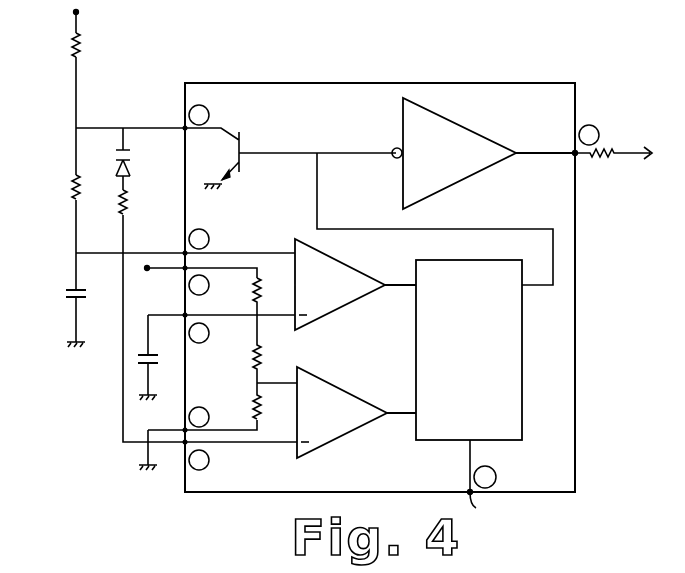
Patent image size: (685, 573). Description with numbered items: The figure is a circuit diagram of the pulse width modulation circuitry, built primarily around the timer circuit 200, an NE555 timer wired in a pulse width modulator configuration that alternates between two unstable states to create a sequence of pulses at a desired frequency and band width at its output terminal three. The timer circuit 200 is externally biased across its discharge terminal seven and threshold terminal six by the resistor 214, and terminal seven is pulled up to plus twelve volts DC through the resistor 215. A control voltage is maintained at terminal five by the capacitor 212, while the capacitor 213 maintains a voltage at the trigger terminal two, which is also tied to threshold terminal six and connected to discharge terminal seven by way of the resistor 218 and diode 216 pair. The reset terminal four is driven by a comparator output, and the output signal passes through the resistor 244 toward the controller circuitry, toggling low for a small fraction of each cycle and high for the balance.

The timer circuit 200 is at (546, 114).
The capacitor 212 is at (158, 368).
The capacitor 213 is at (74, 290).
The resistor 214 is at (74, 190).
The resistor 215 is at (78, 56).
The diode 216 is at (150, 162).
The resistor 218 is at (130, 203).
The resistor 244 is at (603, 160).